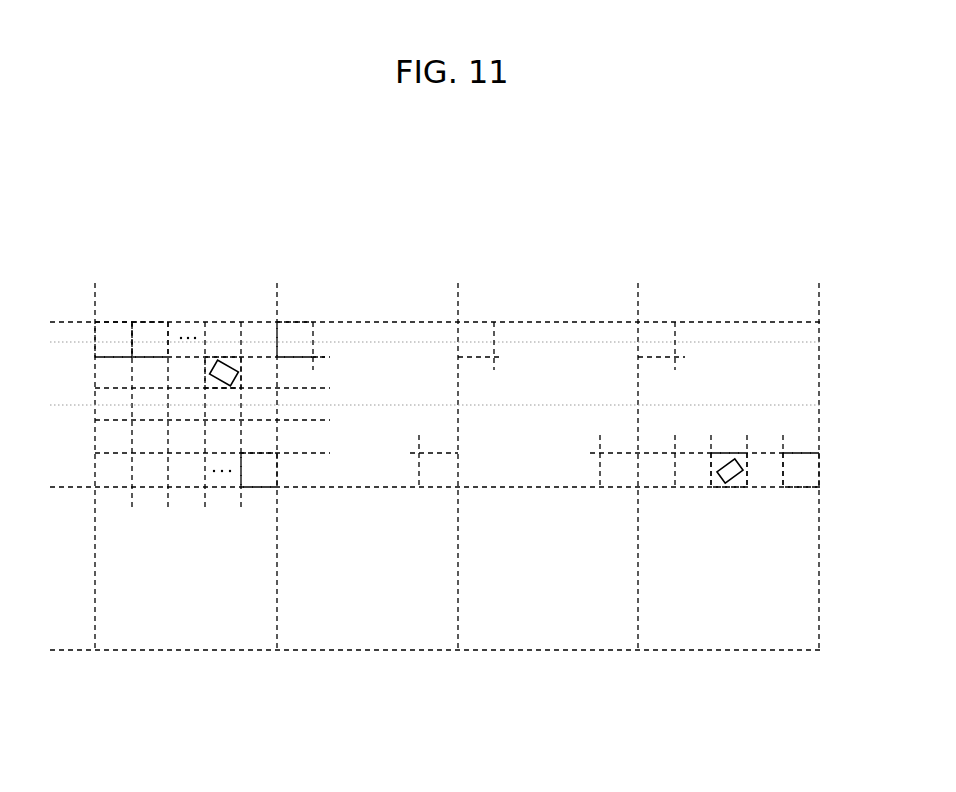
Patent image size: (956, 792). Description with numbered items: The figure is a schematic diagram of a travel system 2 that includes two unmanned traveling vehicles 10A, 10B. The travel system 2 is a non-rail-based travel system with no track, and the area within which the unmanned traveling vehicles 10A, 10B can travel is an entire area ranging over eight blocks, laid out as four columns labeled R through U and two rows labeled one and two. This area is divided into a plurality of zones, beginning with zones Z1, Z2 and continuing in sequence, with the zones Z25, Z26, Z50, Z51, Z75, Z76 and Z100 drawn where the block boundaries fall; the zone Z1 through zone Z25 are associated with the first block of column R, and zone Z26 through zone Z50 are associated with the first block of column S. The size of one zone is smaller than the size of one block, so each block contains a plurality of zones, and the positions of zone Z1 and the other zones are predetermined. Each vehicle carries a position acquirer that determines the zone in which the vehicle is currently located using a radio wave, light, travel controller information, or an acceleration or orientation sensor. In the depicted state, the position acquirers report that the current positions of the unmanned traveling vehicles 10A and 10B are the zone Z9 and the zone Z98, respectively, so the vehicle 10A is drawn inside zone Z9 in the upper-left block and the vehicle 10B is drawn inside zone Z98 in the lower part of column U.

The travel system 2 is at (745, 228).
The unmanned traveling vehicle 10A is at (239, 372).
The unmanned traveling vehicle 10B is at (728, 483).
The zone Z9 is at (212, 357).
The zone Z98 is at (722, 457).
The zone Z1 is at (128, 352).
The zone Z2 is at (165, 352).
The zone Z25 is at (273, 481).
The zone Z26 is at (310, 352).
The zone Z50 is at (453, 481).
The zone Z51 is at (491, 352).
The zone Z75 is at (633, 483).
The zone Z76 is at (672, 352).
The zone Z100 is at (817, 482).